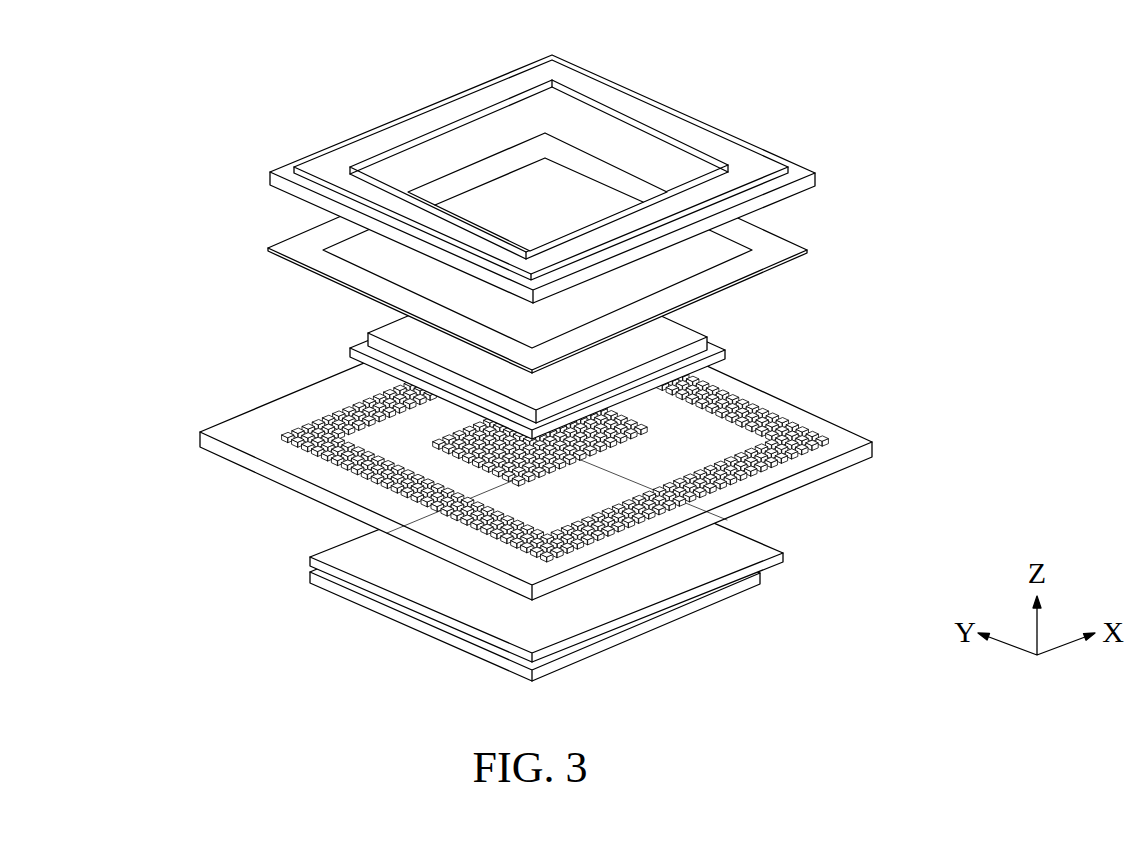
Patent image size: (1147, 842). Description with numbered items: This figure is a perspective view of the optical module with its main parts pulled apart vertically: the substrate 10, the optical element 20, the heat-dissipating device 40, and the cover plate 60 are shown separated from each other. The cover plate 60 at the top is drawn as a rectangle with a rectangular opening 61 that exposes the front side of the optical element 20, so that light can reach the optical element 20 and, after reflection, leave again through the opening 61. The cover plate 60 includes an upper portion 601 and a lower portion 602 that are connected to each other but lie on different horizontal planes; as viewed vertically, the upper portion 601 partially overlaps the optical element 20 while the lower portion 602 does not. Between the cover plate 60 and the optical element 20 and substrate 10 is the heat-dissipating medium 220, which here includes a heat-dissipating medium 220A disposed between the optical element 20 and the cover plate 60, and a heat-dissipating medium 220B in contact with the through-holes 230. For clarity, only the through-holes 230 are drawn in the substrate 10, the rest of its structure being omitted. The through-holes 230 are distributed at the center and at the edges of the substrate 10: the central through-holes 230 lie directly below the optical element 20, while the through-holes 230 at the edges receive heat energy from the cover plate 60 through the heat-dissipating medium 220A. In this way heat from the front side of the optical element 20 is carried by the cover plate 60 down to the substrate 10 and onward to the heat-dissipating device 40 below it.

The substrate 10 is at (833, 437).
The optical element 20 is at (682, 335).
The heat-dissipating device 40 is at (752, 548).
The cover plate 60 is at (494, 173).
The opening 61 is at (490, 130).
The upper portion 601 is at (410, 133).
The lower portion 602 is at (268, 180).
The heat-dissipating medium 220 is at (1060, 114).
The heat-dissipating medium 220A is at (780, 253).
The heat-dissipating medium 220B is at (365, 348).
The through-holes 230 is at (760, 405).